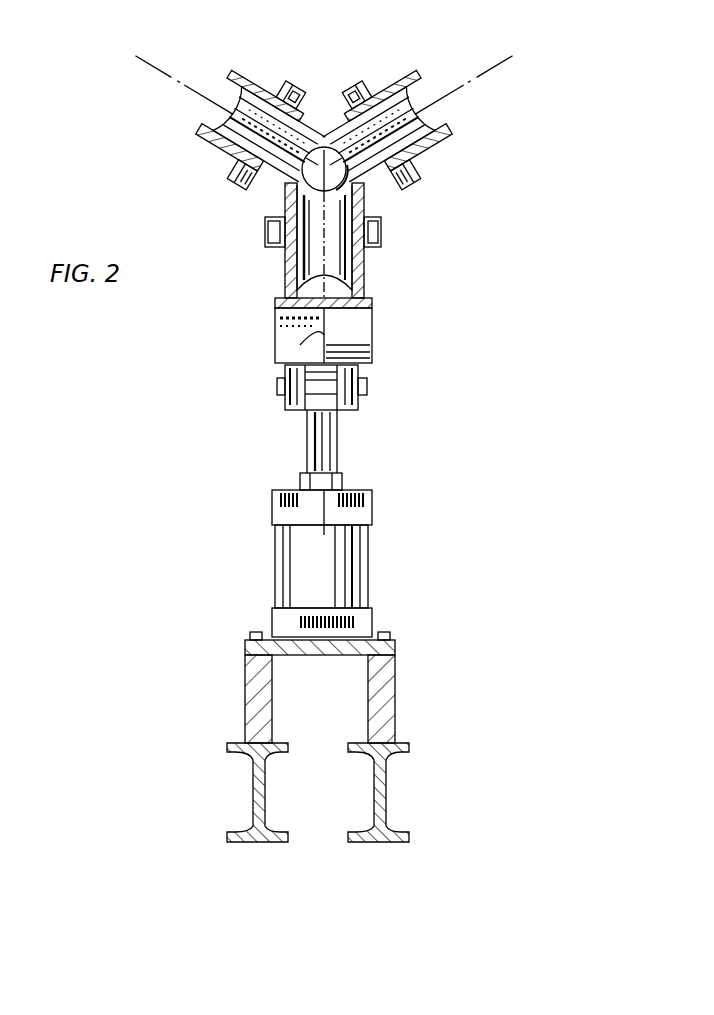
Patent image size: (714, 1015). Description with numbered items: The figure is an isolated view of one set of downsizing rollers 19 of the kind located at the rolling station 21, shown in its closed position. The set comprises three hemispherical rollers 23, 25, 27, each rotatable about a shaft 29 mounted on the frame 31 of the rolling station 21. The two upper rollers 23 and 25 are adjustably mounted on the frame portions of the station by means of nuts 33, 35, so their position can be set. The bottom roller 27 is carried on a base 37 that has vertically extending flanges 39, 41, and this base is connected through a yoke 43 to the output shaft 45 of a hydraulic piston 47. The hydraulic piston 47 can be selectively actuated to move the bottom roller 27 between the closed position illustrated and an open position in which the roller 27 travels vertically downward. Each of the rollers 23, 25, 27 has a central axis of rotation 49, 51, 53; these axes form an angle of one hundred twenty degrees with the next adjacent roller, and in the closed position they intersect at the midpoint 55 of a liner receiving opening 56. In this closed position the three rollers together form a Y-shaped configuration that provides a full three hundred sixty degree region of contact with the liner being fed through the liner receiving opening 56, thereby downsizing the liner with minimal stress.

The set of downsizing rollers 19 is at (130, 136).
The rolling station 21 is at (383, 697).
The hemispherical roller 23 is at (213, 142).
The hemispherical roller 25 is at (406, 110).
The bottom roller 27 is at (340, 258).
The shaft 29 is at (350, 84).
The frame 31 is at (200, 134).
The nut 33 is at (413, 170).
The nut 35 is at (240, 184).
The base 37 is at (358, 325).
The vertically extending flange 39 is at (285, 263).
The vertically extending flange 41 is at (366, 288).
The yoke 43 is at (350, 400).
The output shaft 45 is at (318, 450).
The hydraulic piston 47 is at (352, 562).
The central axis of rotation 49 is at (152, 66).
The central axis of rotation 51 is at (490, 69).
The central axis of rotation 53 is at (322, 330).
The midpoint 55 is at (303, 185).
The liner receiving opening 56 is at (350, 186).